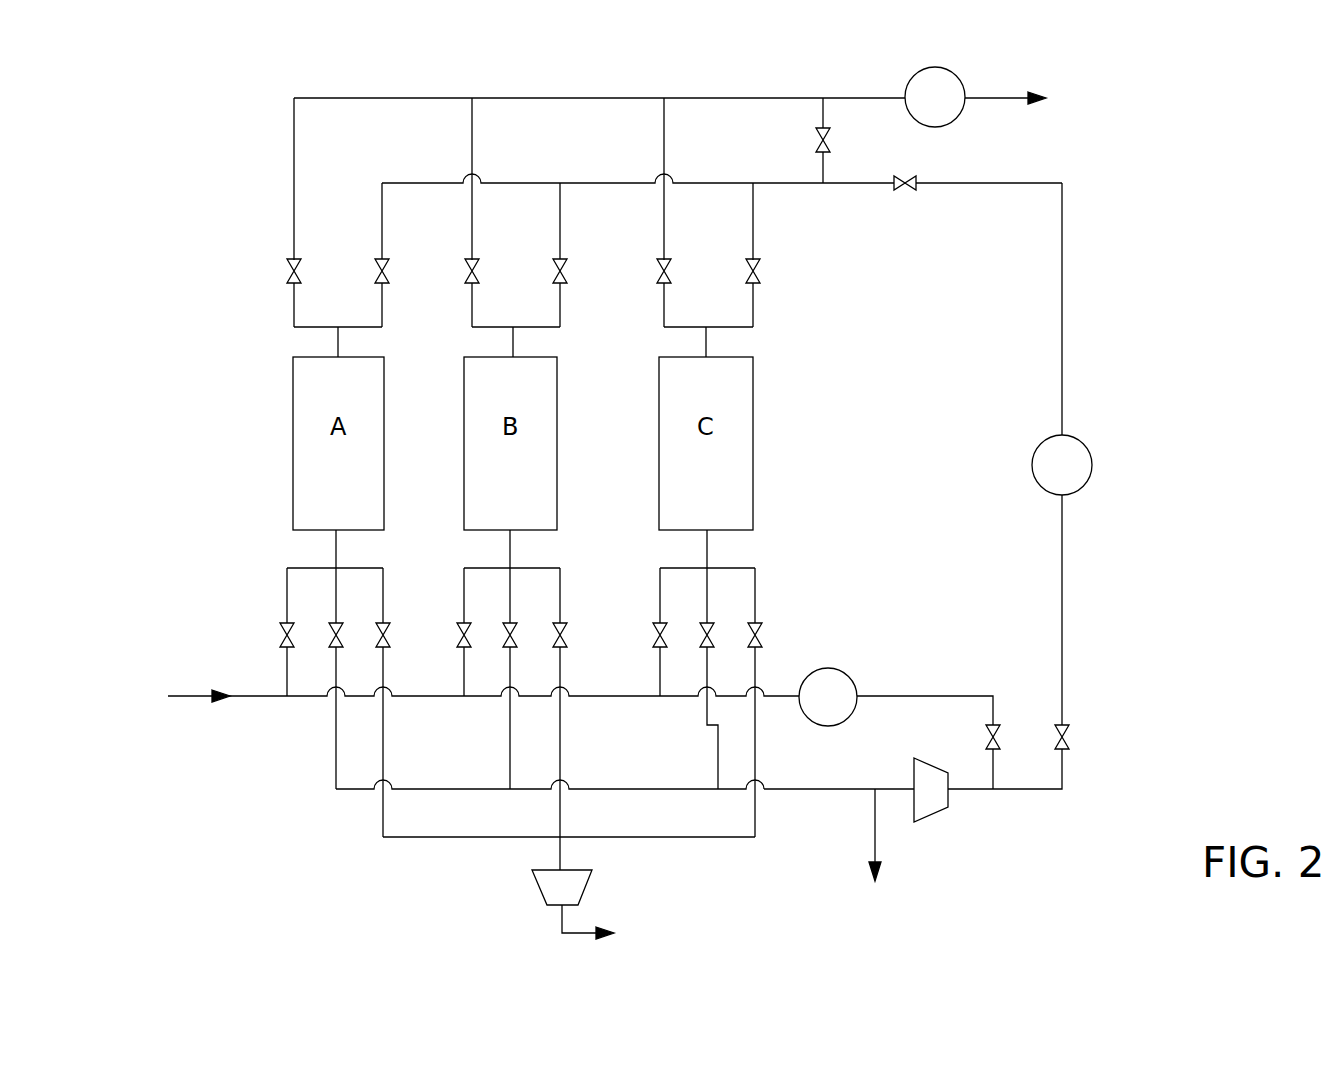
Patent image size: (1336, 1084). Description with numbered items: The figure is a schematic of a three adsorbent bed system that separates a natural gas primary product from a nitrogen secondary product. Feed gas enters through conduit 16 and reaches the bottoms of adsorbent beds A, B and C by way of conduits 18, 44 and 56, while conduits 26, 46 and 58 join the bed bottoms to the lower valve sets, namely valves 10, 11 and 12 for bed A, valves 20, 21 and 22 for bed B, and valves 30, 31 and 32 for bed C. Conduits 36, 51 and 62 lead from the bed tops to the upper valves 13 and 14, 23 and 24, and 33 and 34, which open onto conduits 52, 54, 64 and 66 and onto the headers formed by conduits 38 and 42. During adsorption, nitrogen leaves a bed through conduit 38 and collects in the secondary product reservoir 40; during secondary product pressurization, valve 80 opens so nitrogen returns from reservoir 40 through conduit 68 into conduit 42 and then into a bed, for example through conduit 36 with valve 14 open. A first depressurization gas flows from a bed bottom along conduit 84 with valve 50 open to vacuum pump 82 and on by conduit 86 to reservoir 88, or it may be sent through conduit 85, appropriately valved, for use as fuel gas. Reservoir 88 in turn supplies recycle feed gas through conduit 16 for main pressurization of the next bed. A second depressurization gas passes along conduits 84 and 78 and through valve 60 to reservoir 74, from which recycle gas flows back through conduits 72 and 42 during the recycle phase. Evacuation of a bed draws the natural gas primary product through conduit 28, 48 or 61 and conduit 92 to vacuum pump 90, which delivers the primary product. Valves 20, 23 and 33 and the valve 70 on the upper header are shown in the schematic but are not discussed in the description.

The valve 10 is at (287, 632).
The valve 11 is at (333, 650).
The valve 12 is at (386, 628).
The valve 13 is at (290, 261).
The valve 14 is at (380, 261).
The conduit 16 is at (240, 698).
The conduit 18 is at (287, 665).
The feed valve bed B 20 is at (464, 630).
The valve 21 is at (507, 650).
The valve 22 is at (563, 630).
The top valve bed B 23 is at (470, 261).
The valve 24 is at (558, 261).
The conduit 26 is at (336, 553).
The conduit 28 is at (383, 732).
The valve 30 is at (660, 630).
The valve 31 is at (704, 650).
The valve 32 is at (762, 636).
The top valve bed C 33 is at (662, 261).
The valve 34 is at (752, 261).
The conduit 36 is at (338, 345).
The conduit 38 is at (338, 98).
The reservoir 40 is at (945, 124).
The conduit 42 is at (588, 183).
The conduit 44 is at (464, 666).
The conduit 46 is at (510, 548).
The conduit 48 is at (560, 583).
The valve 50 is at (998, 725).
The conduit 51 is at (513, 345).
The conduit 52 is at (472, 140).
The conduit 54 is at (560, 317).
The conduit 56 is at (660, 666).
The conduit 58 is at (707, 548).
The valve 60 is at (1065, 725).
The conduit 61 is at (755, 595).
The conduit 62 is at (708, 350).
The conduit 64 is at (664, 145).
The conduit 66 is at (753, 223).
The conduit 68 is at (829, 110).
The valve 70 is at (908, 192).
The conduit 72 is at (1062, 252).
The reservoir 74 is at (1092, 463).
The conduit 78 is at (1062, 590).
The valve 80 is at (815, 138).
The vacuum pump 82 is at (935, 813).
The conduit 84 is at (842, 789).
The conduit 85 is at (875, 845).
The conduit 86 is at (933, 696).
The reservoir 88 is at (850, 680).
The vacuum pump 90 is at (537, 888).
The conduit 92 is at (418, 837).